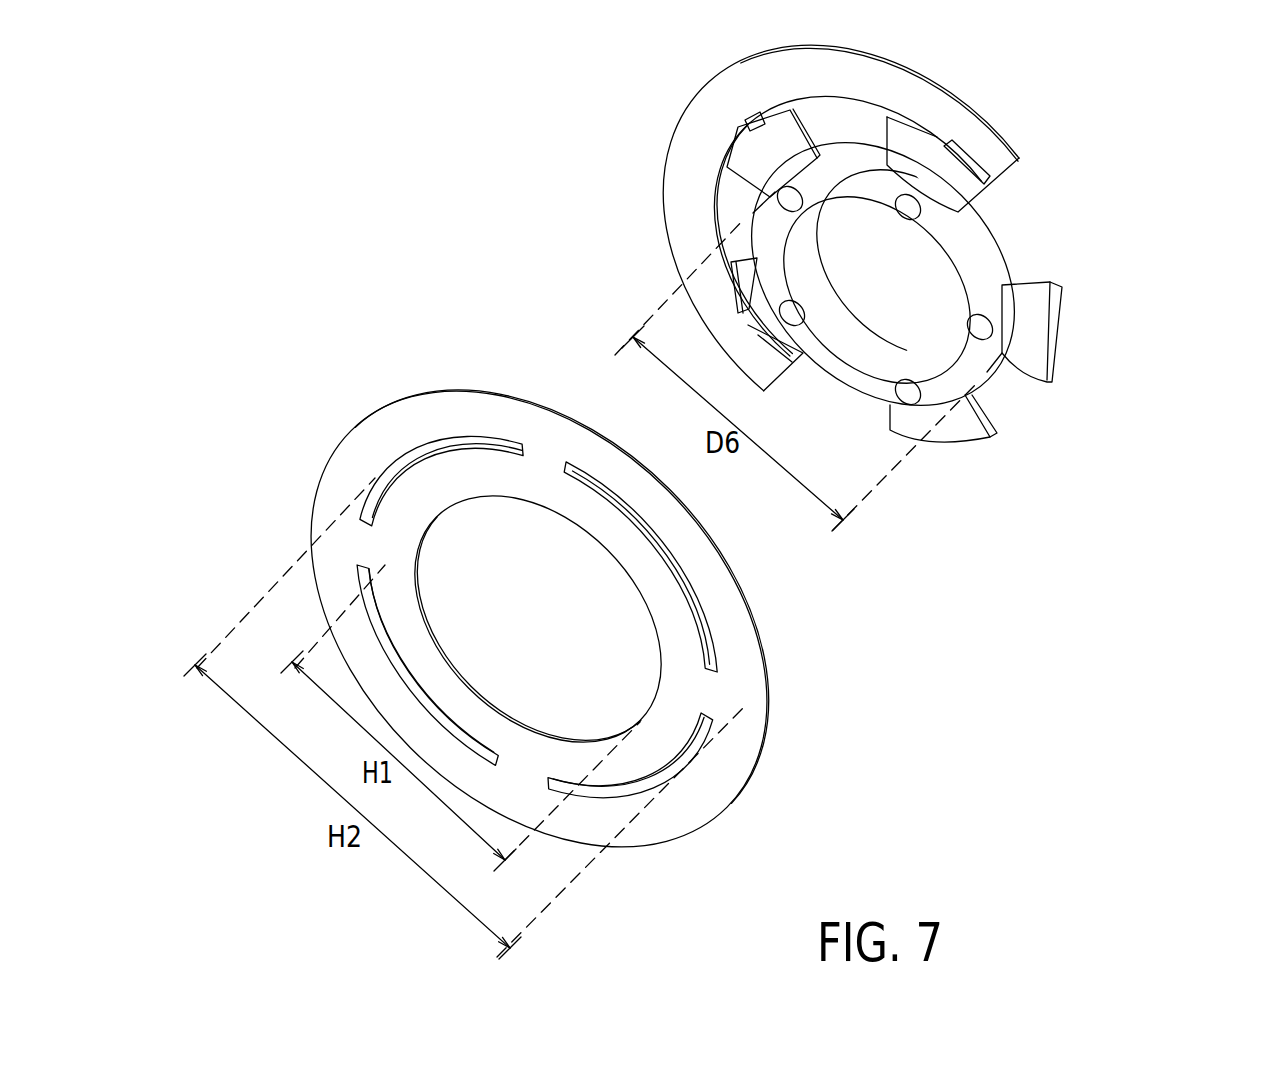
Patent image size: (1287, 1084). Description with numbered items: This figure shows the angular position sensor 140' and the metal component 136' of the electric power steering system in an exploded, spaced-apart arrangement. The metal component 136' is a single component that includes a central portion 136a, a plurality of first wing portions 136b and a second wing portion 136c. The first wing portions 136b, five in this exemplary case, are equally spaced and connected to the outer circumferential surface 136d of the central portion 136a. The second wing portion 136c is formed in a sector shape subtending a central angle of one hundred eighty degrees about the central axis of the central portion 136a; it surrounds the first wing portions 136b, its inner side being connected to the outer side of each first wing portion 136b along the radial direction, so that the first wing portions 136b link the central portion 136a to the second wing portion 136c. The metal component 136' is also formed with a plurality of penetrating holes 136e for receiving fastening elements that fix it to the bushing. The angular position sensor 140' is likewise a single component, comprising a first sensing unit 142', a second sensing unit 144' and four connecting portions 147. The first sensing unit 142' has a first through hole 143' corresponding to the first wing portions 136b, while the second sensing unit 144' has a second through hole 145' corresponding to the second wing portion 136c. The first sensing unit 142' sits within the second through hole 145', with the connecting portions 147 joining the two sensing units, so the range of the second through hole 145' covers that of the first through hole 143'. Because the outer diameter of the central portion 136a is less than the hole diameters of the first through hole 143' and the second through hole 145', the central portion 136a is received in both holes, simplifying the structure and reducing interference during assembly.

The metal component 136' is at (973, 218).
The central portion 136a is at (967, 368).
The first wing portions 136b is at (1037, 306).
The second wing portion 136c is at (980, 148).
The outer circumferential surface 136d is at (997, 247).
The penetrating holes 136e is at (987, 331).
The angular position sensor 140' is at (588, 619).
The first sensing unit 142' is at (626, 628).
The first through hole 143' is at (538, 557).
The second sensing unit 144' is at (617, 596).
The second through hole 145' is at (603, 705).
The connecting portions 147 is at (541, 465).